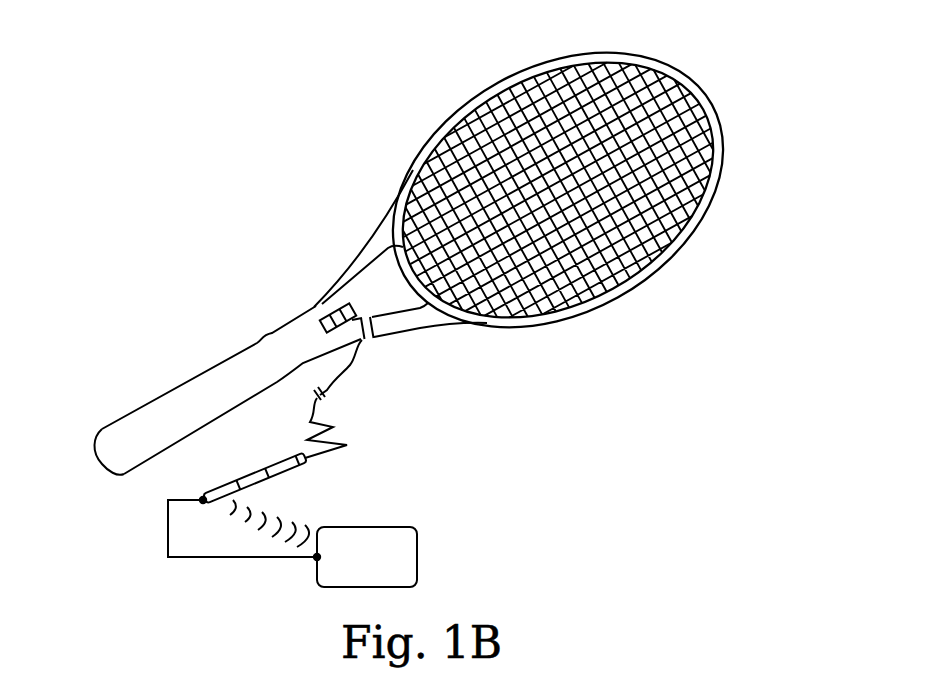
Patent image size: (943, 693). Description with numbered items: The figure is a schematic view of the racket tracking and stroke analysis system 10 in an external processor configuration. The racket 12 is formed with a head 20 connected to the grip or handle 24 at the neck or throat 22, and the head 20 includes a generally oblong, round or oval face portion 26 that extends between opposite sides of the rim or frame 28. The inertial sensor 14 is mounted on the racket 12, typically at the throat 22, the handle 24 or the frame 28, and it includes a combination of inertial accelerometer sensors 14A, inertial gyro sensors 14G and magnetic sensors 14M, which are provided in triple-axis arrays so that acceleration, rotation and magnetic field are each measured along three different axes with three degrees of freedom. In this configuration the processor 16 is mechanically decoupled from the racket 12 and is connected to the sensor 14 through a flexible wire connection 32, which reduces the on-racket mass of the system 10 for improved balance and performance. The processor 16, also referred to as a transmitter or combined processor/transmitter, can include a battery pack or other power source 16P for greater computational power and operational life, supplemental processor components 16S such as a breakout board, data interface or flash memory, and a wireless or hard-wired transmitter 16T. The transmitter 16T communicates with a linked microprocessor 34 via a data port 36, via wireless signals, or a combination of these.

The racket tracking and stroke analysis system 10 is at (114, 136).
The racket 12 is at (329, 224).
The inertial sensor 14 is at (250, 240).
The inertial accelerometer sensors 14A is at (322, 300).
The inertial gyro sensors 14G is at (328, 306).
The magnetic sensors 14M is at (327, 330).
The processor 16 is at (305, 462).
The transmitter 16T is at (212, 490).
The supplemental processor components 16S is at (250, 477).
The power source 16P is at (287, 466).
The head 20 is at (731, 85).
The throat 22 is at (427, 321).
The handle 24 is at (127, 417).
The face portion 26 is at (615, 168).
The frame 28 is at (446, 126).
The flexible wire connection 32 is at (346, 378).
The linked microprocessor 34 is at (418, 536).
The data port 36 is at (203, 500).